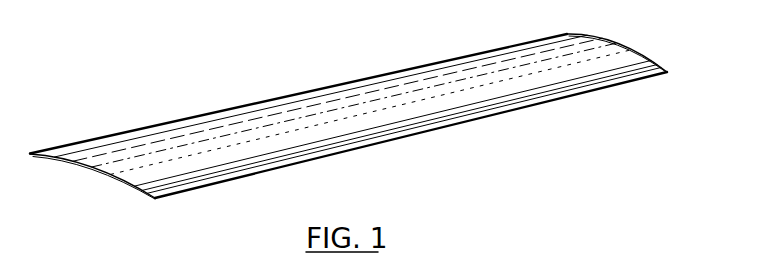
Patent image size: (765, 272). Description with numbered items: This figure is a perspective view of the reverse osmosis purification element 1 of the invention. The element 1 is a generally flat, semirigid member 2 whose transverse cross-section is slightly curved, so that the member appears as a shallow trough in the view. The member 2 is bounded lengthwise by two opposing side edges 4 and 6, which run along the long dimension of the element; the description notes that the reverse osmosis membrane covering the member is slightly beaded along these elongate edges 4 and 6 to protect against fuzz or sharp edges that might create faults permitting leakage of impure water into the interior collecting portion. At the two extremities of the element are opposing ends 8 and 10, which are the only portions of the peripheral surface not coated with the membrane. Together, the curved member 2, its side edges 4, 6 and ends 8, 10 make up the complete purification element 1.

The reverse osmosis purification element 1 is at (356, 116).
The semirigid member 2 is at (501, 68).
The side edge 4 is at (375, 142).
The side edge 6 is at (322, 88).
The end 8 is at (88, 164).
The end 10 is at (634, 47).